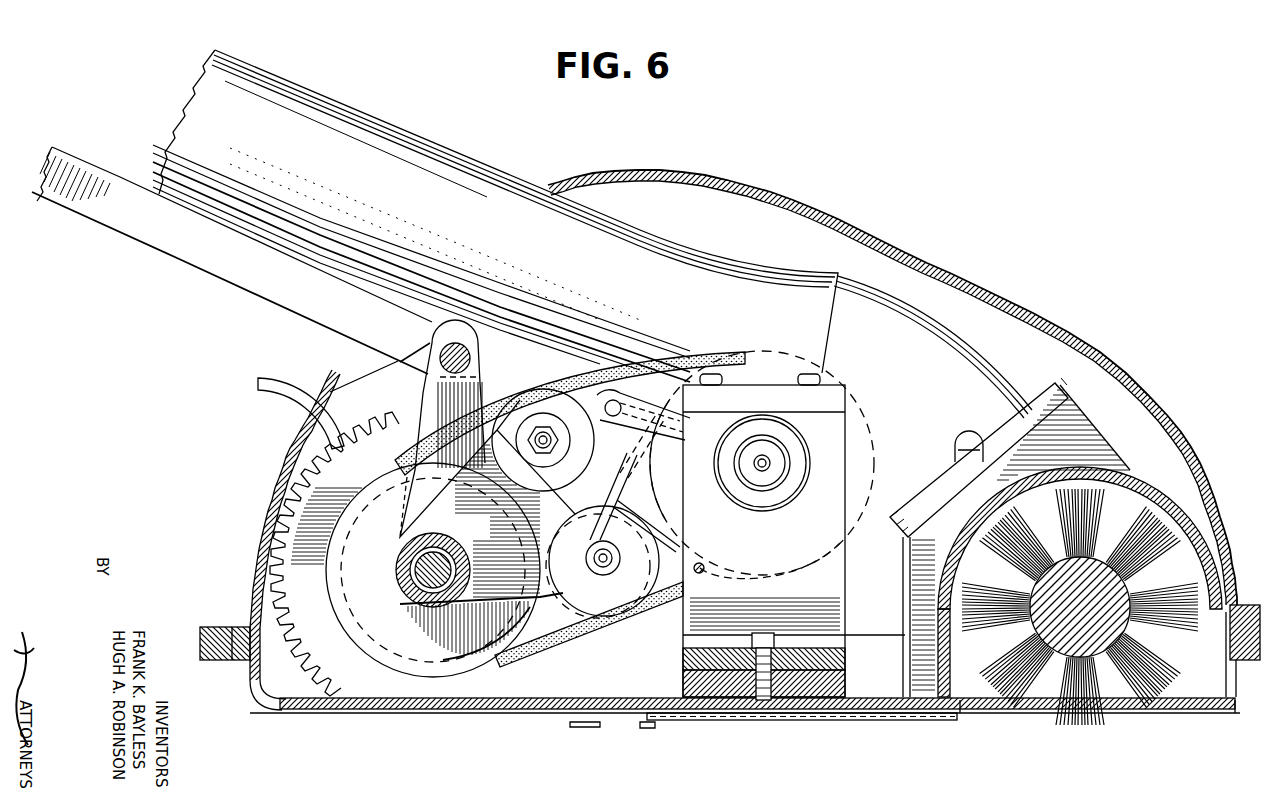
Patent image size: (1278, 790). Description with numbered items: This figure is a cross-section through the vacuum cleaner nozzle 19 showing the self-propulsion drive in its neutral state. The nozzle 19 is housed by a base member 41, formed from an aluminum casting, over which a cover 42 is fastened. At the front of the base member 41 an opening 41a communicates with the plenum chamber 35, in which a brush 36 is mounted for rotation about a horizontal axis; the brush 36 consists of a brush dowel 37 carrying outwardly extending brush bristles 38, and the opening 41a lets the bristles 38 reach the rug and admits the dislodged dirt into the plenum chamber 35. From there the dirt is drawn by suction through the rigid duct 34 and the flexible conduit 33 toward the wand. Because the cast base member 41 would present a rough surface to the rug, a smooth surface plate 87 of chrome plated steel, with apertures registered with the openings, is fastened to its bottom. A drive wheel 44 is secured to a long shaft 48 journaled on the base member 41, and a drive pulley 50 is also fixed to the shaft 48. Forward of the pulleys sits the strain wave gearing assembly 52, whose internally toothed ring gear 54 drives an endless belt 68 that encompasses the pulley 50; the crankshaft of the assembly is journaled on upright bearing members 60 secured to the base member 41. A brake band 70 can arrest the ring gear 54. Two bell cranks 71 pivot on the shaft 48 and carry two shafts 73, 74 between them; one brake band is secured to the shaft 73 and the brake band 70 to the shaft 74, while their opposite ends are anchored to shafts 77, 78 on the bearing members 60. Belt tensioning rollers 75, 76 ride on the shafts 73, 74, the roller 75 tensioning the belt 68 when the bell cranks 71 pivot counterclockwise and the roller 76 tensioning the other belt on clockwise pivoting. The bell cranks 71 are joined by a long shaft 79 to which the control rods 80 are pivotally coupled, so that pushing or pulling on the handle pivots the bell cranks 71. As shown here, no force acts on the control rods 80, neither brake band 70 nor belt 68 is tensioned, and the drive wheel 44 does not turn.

The nozzle 19 is at (730, 440).
The flexible conduit 33 is at (632, 236).
The rigid duct 34 is at (957, 353).
The plenum chamber 35 is at (1205, 692).
The brush 36 is at (1086, 607).
The brush dowel 37 is at (1047, 590).
The brush bristles 38 is at (1147, 534).
The base member 41 is at (630, 702).
The opening 41a is at (1015, 708).
The cover 42 is at (882, 236).
The drive wheel 44 is at (320, 660).
The shaft 48 is at (418, 584).
The drive pulley 50 is at (330, 582).
The strain wave gearing assembly 52 is at (852, 542).
The ring gear 54 is at (858, 408).
The upright bearing members 60 is at (764, 636).
The endless belt 68 is at (378, 462).
The brake band 70 is at (880, 442).
The bell cranks 71 is at (430, 393).
The shaft 73 is at (543, 450).
The shaft 74 is at (592, 559).
The belt tensioning roller 75 is at (580, 441).
The belt tensioning roller 76 is at (618, 637).
The shaft 77 is at (613, 400).
The shaft 78 is at (704, 574).
The long shaft 79 is at (470, 350).
The control rods 80 is at (132, 231).
The smooth surface plate 87 is at (770, 720).